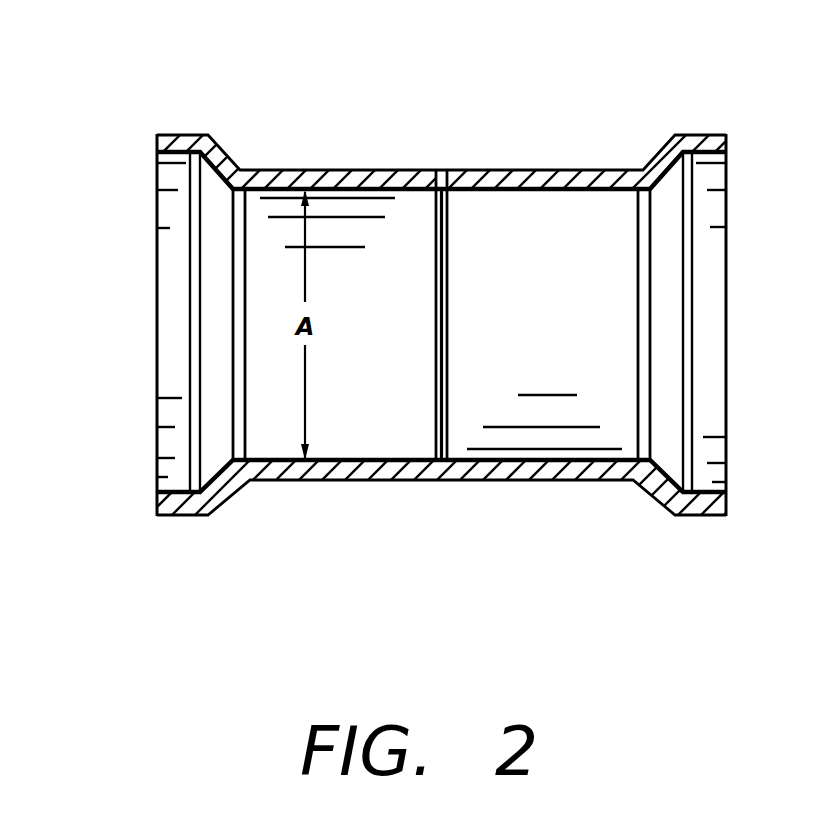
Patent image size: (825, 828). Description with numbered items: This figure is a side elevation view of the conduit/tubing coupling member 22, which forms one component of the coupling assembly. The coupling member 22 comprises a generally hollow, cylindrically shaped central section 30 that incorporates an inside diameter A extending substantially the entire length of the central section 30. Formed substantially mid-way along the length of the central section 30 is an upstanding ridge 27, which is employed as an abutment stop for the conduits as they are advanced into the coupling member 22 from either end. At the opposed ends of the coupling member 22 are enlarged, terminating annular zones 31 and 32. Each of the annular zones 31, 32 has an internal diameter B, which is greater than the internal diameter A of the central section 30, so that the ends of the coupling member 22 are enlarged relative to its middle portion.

The conduit/tubing coupling member 22 is at (440, 362).
The upstanding ridge 27 is at (412, 480).
The central section 30 is at (340, 170).
The terminating annular zone 31 is at (187, 516).
The terminating annular zone 32 is at (710, 516).